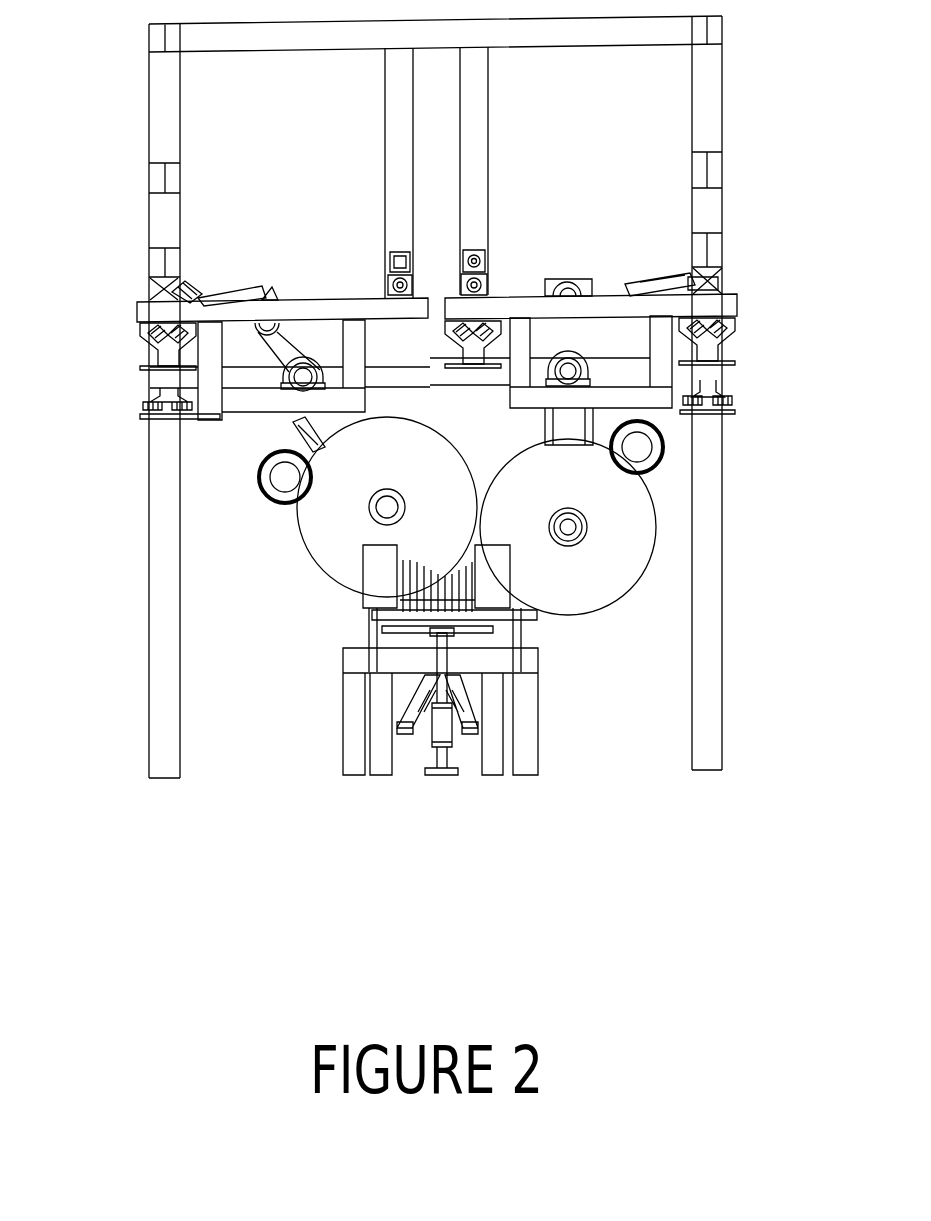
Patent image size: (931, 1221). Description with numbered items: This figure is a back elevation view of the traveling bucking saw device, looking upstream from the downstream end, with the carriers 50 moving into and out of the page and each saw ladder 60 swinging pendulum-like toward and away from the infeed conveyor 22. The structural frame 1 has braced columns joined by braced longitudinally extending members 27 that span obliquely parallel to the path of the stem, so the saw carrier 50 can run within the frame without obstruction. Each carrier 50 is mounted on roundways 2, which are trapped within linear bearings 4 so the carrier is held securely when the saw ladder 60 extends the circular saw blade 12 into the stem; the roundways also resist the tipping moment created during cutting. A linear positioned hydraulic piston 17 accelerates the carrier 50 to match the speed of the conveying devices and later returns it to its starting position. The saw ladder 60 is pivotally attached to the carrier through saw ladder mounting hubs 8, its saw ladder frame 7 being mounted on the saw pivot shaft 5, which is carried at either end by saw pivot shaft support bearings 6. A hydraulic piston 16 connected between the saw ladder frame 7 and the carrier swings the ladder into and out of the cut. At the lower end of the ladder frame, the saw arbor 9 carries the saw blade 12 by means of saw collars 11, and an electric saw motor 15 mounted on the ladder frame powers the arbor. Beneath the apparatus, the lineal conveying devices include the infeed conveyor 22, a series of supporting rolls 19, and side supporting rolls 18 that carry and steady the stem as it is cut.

The structural frame 1 is at (723, 210).
The braced longitudinally extending members 27 is at (149, 165).
The linear positioned hydraulic piston 17 is at (390, 268).
The saw ladder frame 7 is at (273, 292).
The hydraulic piston 16 is at (178, 292).
The saw ladder mounting hubs 8 is at (140, 331).
The linear bearings 4 is at (150, 358).
The roundways 2 is at (152, 367).
The saw pivot shaft support bearings 6 is at (287, 383).
The saw pivot shaft 5 is at (300, 392).
The saw motor 15 is at (256, 478).
The saw arbor 9 is at (368, 510).
The saw collars 11 is at (367, 518).
The circular saw blade 12 is at (362, 576).
The side supporting rolls 18 is at (365, 627).
The supporting rolls 19 is at (372, 640).
The infeed conveyor 22 is at (400, 708).
The saw ladder 60 is at (582, 332).
The saw carrier 50 is at (727, 303).